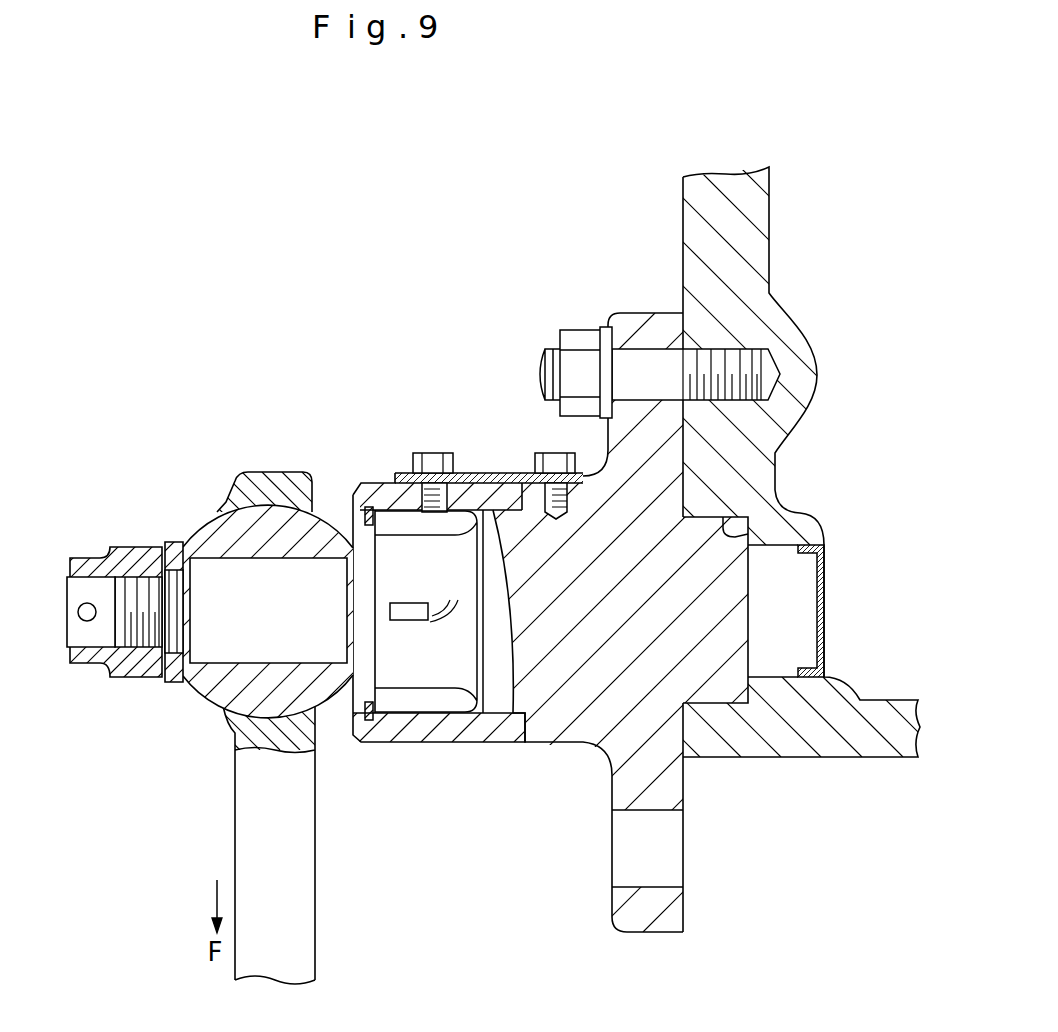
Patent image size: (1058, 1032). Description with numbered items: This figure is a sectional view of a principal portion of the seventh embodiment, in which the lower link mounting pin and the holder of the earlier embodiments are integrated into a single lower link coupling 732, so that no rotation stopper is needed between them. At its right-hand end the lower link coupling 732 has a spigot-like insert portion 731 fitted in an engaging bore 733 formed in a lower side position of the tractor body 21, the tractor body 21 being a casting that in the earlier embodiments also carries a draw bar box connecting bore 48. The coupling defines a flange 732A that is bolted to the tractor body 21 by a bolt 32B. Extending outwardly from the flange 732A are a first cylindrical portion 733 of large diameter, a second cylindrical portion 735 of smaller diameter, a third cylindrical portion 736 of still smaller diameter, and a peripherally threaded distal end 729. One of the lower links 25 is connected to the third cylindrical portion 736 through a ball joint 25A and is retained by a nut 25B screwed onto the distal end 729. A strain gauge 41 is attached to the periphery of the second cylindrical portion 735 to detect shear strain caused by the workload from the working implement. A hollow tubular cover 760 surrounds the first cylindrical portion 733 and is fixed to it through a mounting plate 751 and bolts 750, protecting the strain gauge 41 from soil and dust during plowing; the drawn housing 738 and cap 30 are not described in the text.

The tractor body 21 is at (845, 742).
The lower link 25 is at (313, 917).
The ball joint 25A is at (202, 528).
The nut 25B is at (118, 668).
The cap 30 is at (792, 613).
The bolt 32B is at (548, 350).
The strain gauge 41 is at (408, 620).
The draw bar box connecting bore 48 is at (673, 853).
The peripherally threaded distal end 729 is at (135, 580).
The spigot-like insert portion 731 is at (720, 680).
The lower link coupling 732 is at (551, 762).
The flange 732A is at (632, 312).
The first cylindrical portion 733 is at (732, 535).
The second cylindrical portion 735 is at (445, 675).
The third cylindrical portion 736 is at (215, 650).
The housing 738 is at (383, 513).
The bolts 750 is at (432, 453).
The mounting plate 751 is at (487, 475).
The hollow tubular cover 760 is at (370, 745).